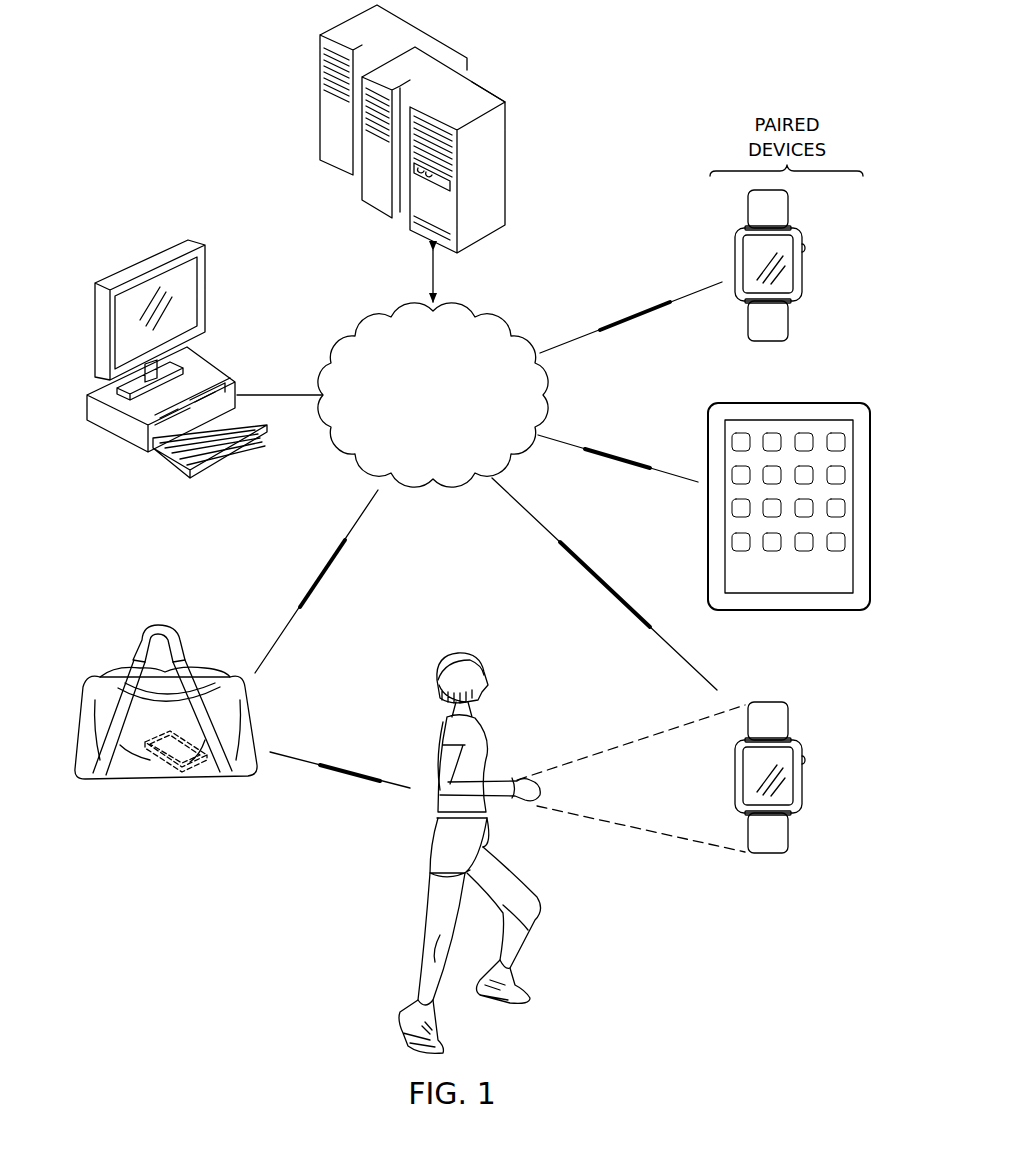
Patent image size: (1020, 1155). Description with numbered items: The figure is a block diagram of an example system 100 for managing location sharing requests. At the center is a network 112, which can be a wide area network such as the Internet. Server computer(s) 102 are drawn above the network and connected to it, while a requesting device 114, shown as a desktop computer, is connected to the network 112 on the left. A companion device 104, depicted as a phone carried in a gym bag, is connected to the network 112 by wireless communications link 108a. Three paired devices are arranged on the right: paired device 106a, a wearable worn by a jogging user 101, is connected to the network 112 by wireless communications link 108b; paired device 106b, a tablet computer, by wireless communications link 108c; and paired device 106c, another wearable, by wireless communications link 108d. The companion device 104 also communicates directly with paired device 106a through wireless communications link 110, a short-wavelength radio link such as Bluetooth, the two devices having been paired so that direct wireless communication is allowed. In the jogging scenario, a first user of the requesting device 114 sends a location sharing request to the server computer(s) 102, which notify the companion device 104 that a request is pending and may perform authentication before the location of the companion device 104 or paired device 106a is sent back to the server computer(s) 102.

The system 100 is at (252, 72).
The user 101 is at (430, 893).
The server computer(s) 102 is at (508, 125).
The companion device 104 is at (164, 766).
The paired device 106a is at (804, 782).
The paired device 106b is at (793, 403).
The paired device 106c is at (805, 268).
The wireless communications link 108a is at (295, 612).
The wireless communications link 108b is at (632, 609).
The wireless communications link 108c is at (653, 467).
The wireless communications link 108d is at (668, 303).
The wireless communications link 110 is at (371, 780).
The network 112 is at (416, 427).
The requesting device 114 is at (143, 256).